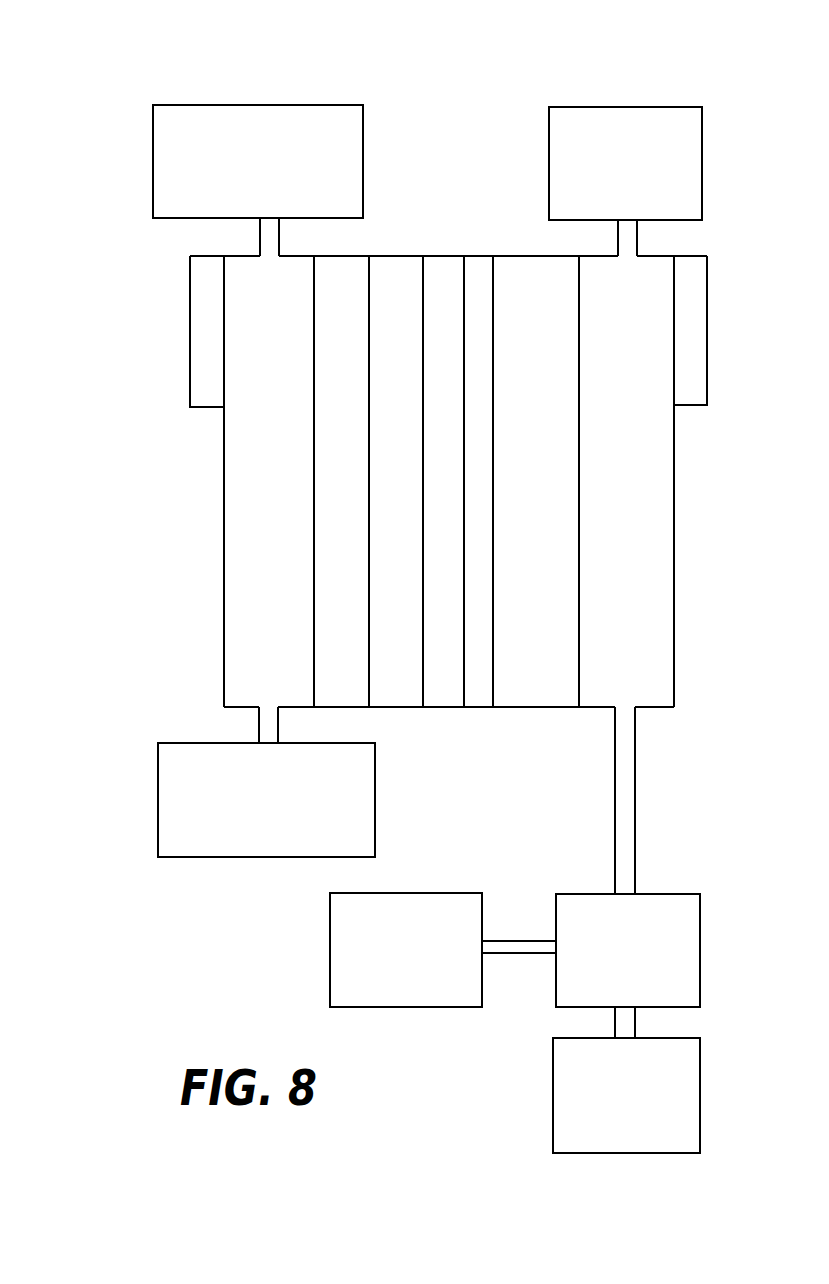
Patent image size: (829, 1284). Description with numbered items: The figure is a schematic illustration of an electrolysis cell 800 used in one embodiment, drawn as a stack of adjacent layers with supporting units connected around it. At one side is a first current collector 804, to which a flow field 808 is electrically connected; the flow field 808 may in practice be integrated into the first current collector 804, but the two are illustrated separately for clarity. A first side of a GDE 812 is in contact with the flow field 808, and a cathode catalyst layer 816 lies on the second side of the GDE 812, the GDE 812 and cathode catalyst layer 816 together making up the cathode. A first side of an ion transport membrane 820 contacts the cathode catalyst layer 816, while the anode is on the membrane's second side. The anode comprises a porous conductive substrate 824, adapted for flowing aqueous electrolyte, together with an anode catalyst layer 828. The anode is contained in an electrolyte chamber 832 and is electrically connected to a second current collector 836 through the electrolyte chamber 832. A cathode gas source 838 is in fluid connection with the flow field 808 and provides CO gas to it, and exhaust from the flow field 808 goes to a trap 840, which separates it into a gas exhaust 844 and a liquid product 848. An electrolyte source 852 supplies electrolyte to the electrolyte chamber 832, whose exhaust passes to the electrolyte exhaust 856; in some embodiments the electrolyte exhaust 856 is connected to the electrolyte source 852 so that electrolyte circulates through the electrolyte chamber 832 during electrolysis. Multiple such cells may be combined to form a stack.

The electrolysis cell 800 is at (143, 90).
The first current collector 804 is at (690, 390).
The flow field 808 is at (657, 495).
The GDE 812 is at (513, 307).
The cathode catalyst layer 816 is at (477, 280).
The ion transport membrane 820 is at (457, 278).
The porous conductive substrate 824 is at (388, 303).
The anode catalyst layer 828 is at (353, 273).
The electrolyte chamber 832 is at (253, 419).
The second current collector 836 is at (207, 335).
The cathode gas source 838 is at (625, 181).
The trap 840 is at (628, 857).
The gas exhaust 844 is at (626, 1080).
The liquid product 848 is at (443, 950).
The electrolyte source 852 is at (266, 782).
The electrolyte exhaust 856 is at (258, 180).